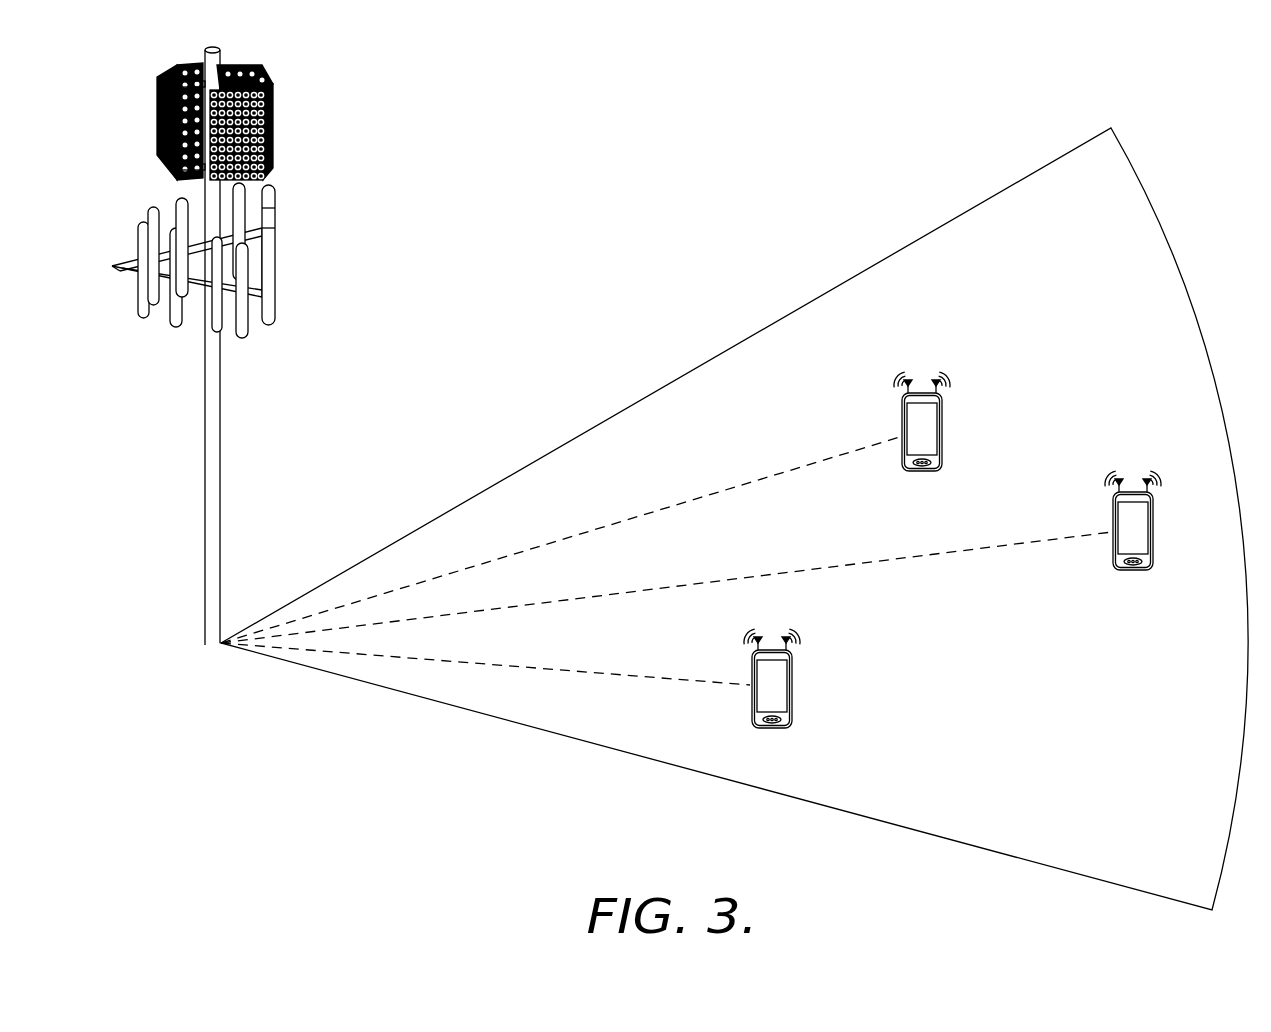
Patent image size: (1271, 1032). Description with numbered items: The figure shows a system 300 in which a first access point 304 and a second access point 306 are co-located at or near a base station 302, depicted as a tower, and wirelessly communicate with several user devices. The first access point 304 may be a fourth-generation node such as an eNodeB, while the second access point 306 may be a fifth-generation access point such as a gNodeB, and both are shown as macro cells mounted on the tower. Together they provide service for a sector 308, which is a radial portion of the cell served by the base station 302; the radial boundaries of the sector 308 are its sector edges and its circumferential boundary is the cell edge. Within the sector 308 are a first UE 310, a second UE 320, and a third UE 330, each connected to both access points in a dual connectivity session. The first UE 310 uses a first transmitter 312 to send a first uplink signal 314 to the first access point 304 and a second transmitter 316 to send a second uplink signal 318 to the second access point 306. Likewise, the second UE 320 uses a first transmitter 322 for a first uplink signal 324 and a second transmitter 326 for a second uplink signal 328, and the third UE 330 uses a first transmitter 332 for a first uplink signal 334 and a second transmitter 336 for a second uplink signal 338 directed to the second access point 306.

The system 300 is at (1222, 66).
The base station 302 is at (205, 480).
The first access point 304 is at (304, 260).
The second access point 306 is at (299, 92).
The sector 308 is at (741, 342).
The first UE 310 is at (1154, 541).
The first transmitter 312 is at (1088, 496).
The first uplink signal 314 is at (1082, 463).
The second transmitter 316 is at (1180, 496).
The second uplink signal 318 is at (1184, 463).
The second UE 320 is at (943, 442).
The first transmitter 322 is at (877, 397).
The first uplink signal 324 is at (871, 364).
The second transmitter 326 is at (969, 397).
The second uplink signal 328 is at (973, 364).
The third UE 330 is at (793, 699).
The first transmitter 332 is at (727, 654).
The first uplink signal 334 is at (721, 621).
The second transmitter 336 is at (819, 654).
The second uplink signal 338 is at (823, 621).